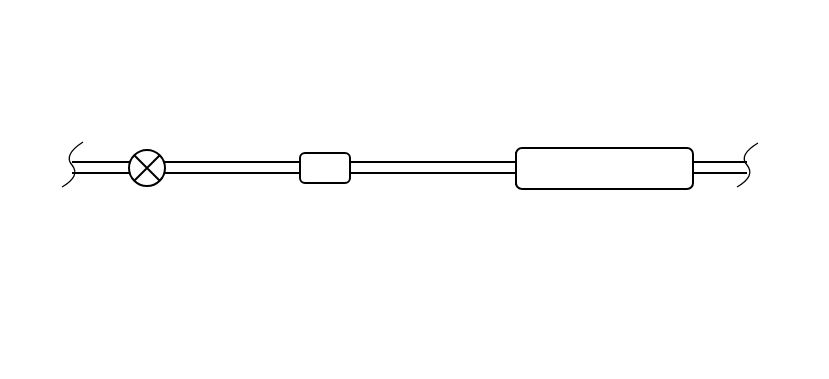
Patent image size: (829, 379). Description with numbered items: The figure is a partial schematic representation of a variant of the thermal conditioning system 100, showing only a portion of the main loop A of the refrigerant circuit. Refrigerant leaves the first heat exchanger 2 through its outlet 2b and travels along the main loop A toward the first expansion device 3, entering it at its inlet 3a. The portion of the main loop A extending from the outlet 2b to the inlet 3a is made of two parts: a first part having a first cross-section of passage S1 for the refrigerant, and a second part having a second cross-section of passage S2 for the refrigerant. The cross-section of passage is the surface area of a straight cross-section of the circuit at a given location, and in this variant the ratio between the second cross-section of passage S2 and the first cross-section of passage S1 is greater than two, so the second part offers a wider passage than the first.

The thermal conditioning system 100 is at (337, 50).
The main loop A is at (107, 168).
The first expansion device 3 is at (150, 152).
The inlet of the first expansion device 3a is at (166, 177).
The second cross-section of passage S2 is at (325, 170).
The first cross-section of passage S1 is at (403, 170).
The first heat exchanger 2 is at (628, 165).
The outlet of the first heat exchanger 2b is at (512, 162).